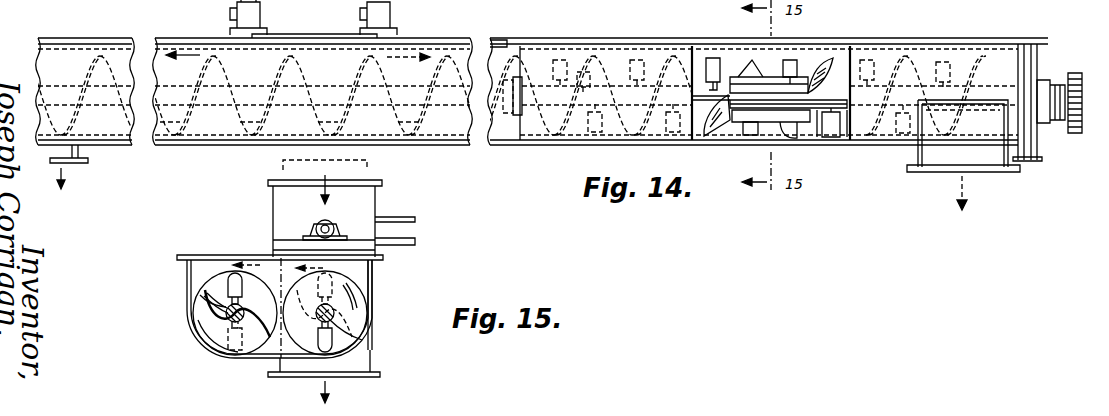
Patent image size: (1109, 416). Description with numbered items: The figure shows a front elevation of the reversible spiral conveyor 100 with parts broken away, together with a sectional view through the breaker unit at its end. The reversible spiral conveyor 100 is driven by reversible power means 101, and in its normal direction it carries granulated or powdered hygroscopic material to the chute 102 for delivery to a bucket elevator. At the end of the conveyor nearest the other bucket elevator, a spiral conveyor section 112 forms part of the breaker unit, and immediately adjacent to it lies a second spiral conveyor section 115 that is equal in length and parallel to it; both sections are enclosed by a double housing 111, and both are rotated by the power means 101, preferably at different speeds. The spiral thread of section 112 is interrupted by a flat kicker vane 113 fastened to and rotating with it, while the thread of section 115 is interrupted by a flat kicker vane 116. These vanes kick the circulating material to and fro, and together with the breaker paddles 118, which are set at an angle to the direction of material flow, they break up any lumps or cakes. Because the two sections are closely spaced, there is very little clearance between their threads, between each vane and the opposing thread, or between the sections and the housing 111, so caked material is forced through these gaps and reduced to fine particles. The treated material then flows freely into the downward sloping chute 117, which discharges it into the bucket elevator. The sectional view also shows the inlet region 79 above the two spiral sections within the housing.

In FIG. 14, the reversible spiral conveyor 100 is at (240, 151).
In FIG. 14, the reversible power means 101 is at (1066, 62).
In FIG. 14, the chute 102 is at (80, 155).
In FIG. 15, the chute 102 is at (363, 360).
In FIG. 15, the inlet chute 79 is at (258, 212).
In FIG. 15, the double housing 111 is at (188, 325).
In FIG. 14, the spiral conveyor section 112 is at (97, 70).
In FIG. 15, the spiral conveyor section 112 is at (367, 290).
In FIG. 14, the flat kicker vane 113 is at (613, 73).
In FIG. 15, the flat kicker vane 113 is at (343, 330).
In FIG. 14, the spiral conveyor section 115 is at (727, 133).
In FIG. 15, the spiral conveyor section 115 is at (213, 337).
In FIG. 14, the flat kicker vane 116 is at (803, 133).
In FIG. 15, the flat kicker vane 116 is at (208, 294).
In FIG. 14, the downward sloping chute 117 is at (942, 158).
In FIG. 14, the breaker paddles 118 is at (560, 60).
In FIG. 15, the breaker paddles 118 is at (227, 277).